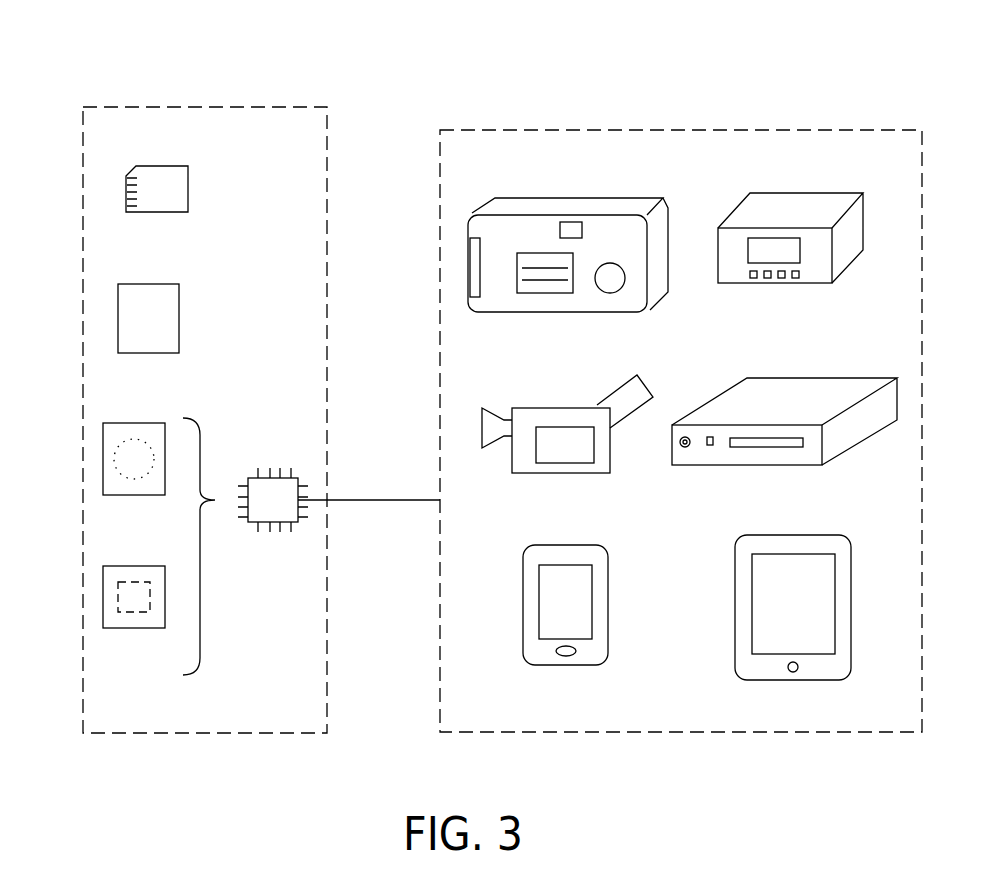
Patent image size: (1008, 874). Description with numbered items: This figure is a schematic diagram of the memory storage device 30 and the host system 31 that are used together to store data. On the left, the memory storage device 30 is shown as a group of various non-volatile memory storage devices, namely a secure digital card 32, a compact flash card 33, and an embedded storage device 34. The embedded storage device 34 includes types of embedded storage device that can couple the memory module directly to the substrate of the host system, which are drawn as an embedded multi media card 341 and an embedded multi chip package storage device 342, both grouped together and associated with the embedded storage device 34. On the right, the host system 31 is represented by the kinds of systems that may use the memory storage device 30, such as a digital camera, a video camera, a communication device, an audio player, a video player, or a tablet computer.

The memory storage device 30 is at (193, 107).
The host system 31 is at (606, 130).
The secure digital (SD) card 32 is at (126, 196).
The compact flash (CF) card 33 is at (118, 321).
The embedded storage device 34 is at (272, 478).
The embedded multi media card (eMMC) 341 is at (103, 462).
The embedded multi chip package (eMCP) storage device 342 is at (103, 600).